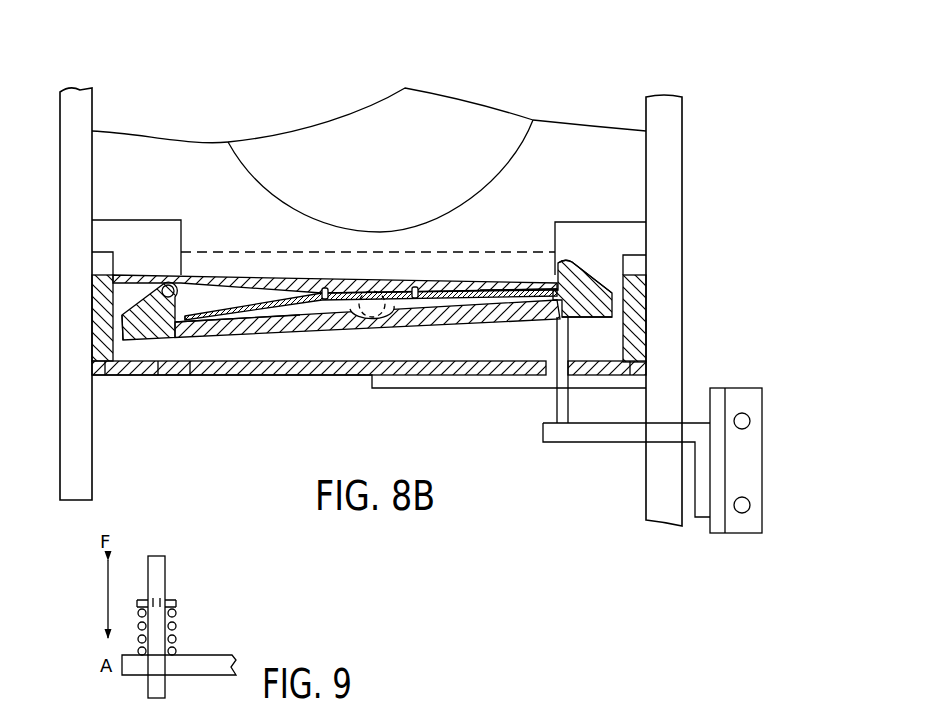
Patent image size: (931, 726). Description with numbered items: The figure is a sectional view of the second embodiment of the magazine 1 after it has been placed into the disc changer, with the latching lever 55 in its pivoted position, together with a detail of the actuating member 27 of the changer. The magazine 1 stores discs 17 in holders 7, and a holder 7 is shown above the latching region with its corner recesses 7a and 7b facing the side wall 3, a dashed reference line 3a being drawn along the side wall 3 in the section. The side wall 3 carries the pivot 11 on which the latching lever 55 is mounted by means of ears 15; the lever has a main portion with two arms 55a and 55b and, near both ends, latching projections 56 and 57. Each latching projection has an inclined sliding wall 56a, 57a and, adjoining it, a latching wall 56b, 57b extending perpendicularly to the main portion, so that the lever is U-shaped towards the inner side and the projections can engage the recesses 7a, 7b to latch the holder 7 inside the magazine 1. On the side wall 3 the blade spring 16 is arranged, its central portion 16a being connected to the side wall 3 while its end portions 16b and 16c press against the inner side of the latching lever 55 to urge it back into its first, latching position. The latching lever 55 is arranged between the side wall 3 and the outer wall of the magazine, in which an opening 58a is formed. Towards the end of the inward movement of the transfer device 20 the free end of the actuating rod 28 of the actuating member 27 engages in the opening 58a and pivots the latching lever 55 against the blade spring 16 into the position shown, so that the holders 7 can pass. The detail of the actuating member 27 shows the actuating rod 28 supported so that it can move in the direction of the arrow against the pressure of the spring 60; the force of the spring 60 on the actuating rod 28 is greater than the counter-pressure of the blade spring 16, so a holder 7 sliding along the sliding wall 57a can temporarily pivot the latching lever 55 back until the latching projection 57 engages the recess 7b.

In FIG. 8B, the magazine 1 is at (151, 125).
In FIG. 8B, the side wall 3 is at (222, 276).
In FIG. 8B, the reference plane 3a is at (458, 254).
In FIG. 8B, the holder 7 is at (576, 150).
In FIG. 8B, the recess 7a is at (113, 232).
In FIG. 8B, the recess 7b is at (590, 232).
In FIG. 8B, the pivot 11 is at (368, 322).
In FIG. 8B, the ears 15 is at (384, 312).
In FIG. 8B, the blade spring 16 is at (290, 292).
In FIG. 8B, the central portion 16a is at (236, 310).
In FIG. 8B, the end portion 16b is at (382, 305).
In FIG. 8B, the end portion 16c is at (506, 298).
In FIG. 8B, the disc 17 is at (446, 118).
In FIG. 8B, the transfer device 20 is at (684, 192).
In FIG. 8B, the actuating member 27 is at (605, 443).
In FIG. 9, the actuating member 27 is at (211, 641).
In FIG. 8B, the actuating rod 28 is at (558, 426).
In FIG. 9, the actuating rod 28 is at (160, 574).
In FIG. 8B, the latching lever 55 is at (367, 359).
In FIG. 8B, the arm 55a is at (218, 337).
In FIG. 8B, the arm 55b is at (474, 322).
In FIG. 8B, the latching projection 56 is at (160, 288).
In FIG. 8B, the sliding wall 56a is at (125, 316).
In FIG. 8B, the latching wall 56b is at (166, 284).
In FIG. 8B, the latching projection 57 is at (590, 293).
In FIG. 8B, the sliding wall 57a is at (578, 268).
In FIG. 8B, the latching wall 57b is at (590, 318).
In FIG. 8B, the opening 58a is at (172, 372).
In FIG. 9, the spring 60 is at (177, 627).